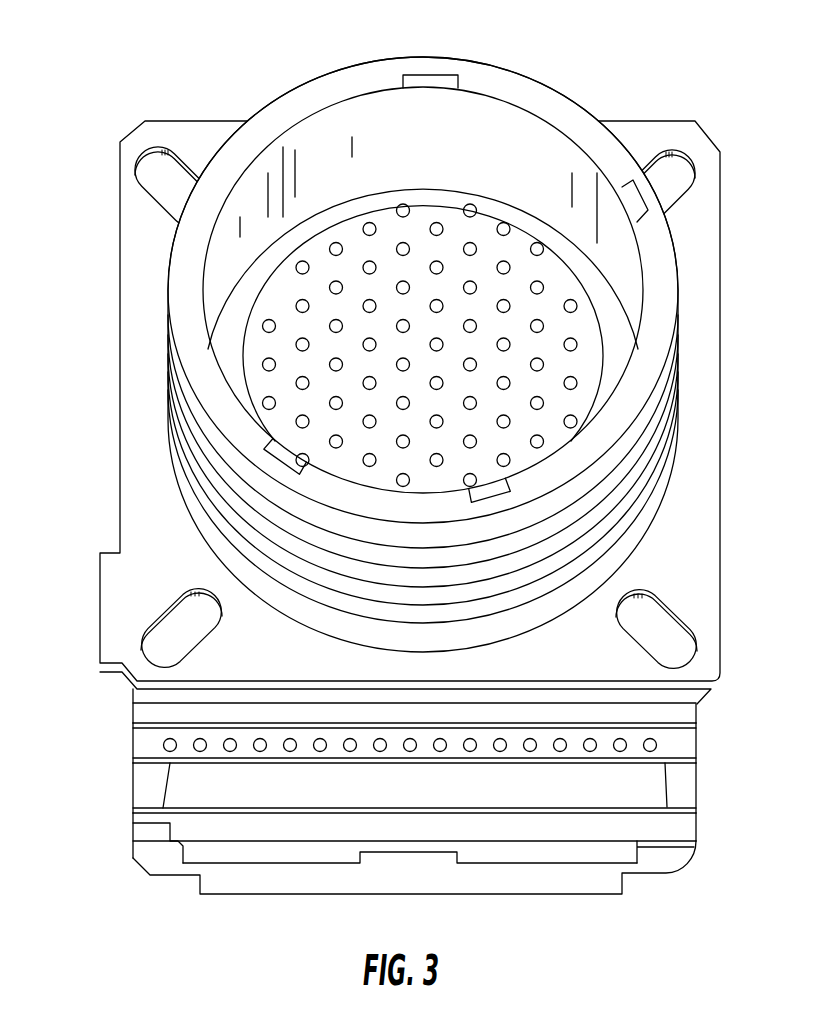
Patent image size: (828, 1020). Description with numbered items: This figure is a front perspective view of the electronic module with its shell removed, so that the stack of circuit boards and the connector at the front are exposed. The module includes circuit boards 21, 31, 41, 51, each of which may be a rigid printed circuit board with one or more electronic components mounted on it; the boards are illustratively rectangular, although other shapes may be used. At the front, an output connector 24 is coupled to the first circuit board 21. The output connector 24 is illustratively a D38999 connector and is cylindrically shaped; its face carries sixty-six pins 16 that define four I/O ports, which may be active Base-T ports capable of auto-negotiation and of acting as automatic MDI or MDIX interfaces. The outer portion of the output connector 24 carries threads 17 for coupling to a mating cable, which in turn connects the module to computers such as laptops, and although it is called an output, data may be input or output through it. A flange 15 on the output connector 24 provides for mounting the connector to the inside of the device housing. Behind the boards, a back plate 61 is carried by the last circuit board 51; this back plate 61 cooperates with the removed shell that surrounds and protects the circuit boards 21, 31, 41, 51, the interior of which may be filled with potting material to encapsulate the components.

The output connector 24 is at (397, 355).
The flange 15 is at (112, 613).
The pins 16 is at (364, 266).
The threads 17 is at (652, 405).
The first circuit board 21 is at (147, 710).
The circuit board 31 is at (143, 743).
The circuit board 41 is at (147, 784).
The last circuit board 51 is at (673, 825).
The back plate 61 is at (445, 880).